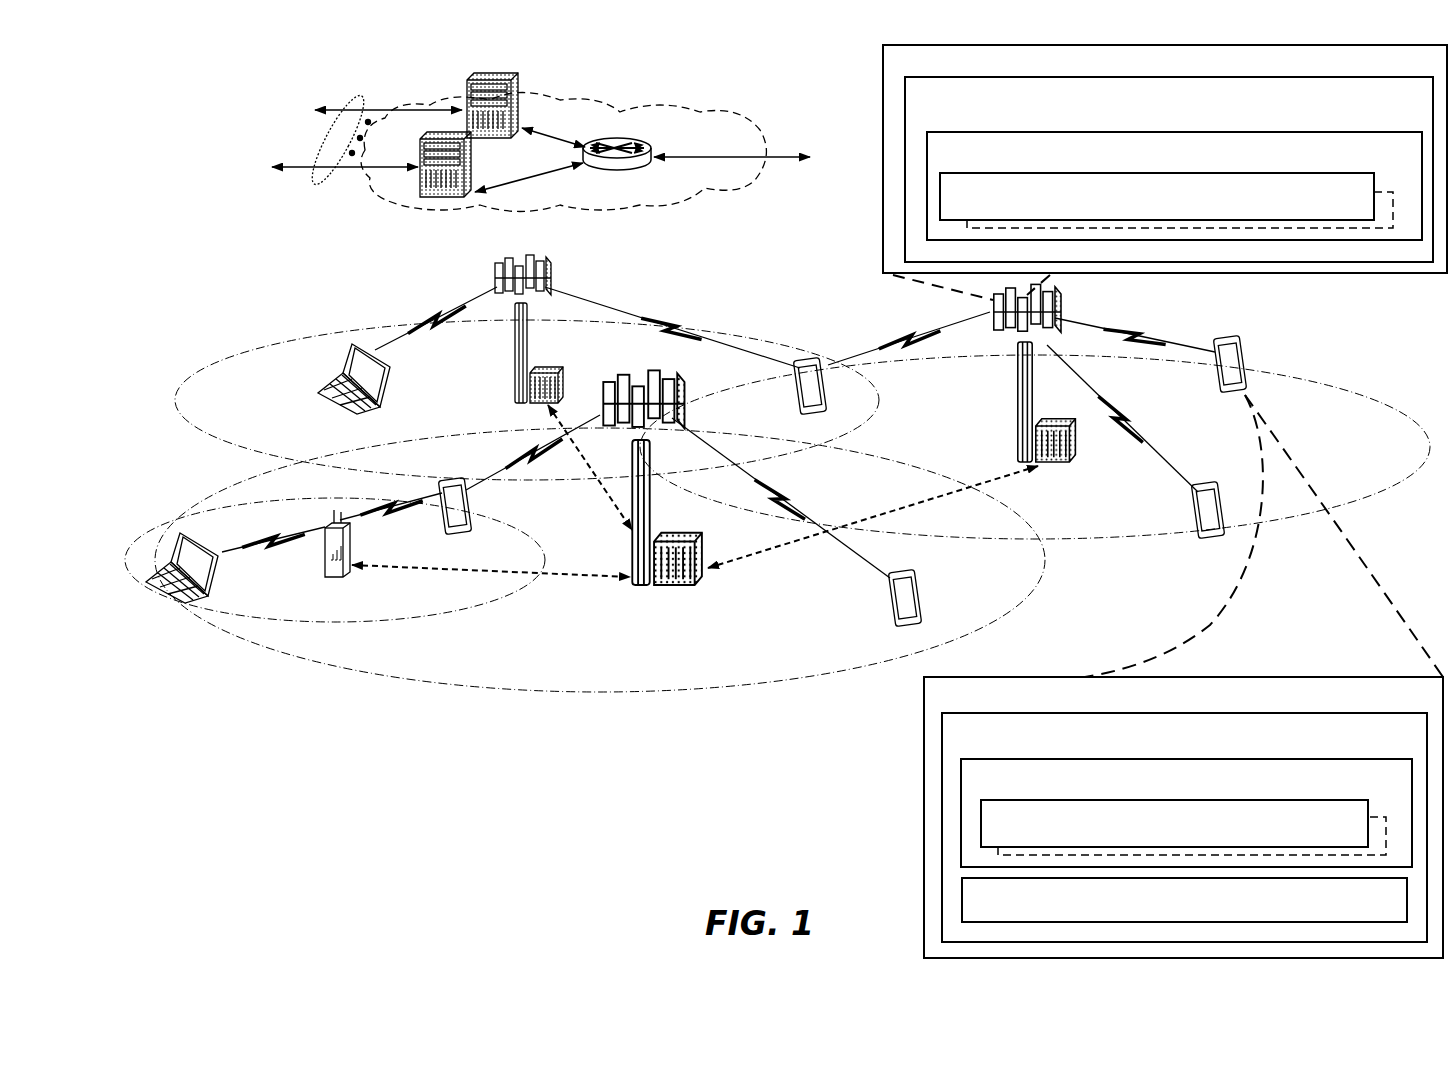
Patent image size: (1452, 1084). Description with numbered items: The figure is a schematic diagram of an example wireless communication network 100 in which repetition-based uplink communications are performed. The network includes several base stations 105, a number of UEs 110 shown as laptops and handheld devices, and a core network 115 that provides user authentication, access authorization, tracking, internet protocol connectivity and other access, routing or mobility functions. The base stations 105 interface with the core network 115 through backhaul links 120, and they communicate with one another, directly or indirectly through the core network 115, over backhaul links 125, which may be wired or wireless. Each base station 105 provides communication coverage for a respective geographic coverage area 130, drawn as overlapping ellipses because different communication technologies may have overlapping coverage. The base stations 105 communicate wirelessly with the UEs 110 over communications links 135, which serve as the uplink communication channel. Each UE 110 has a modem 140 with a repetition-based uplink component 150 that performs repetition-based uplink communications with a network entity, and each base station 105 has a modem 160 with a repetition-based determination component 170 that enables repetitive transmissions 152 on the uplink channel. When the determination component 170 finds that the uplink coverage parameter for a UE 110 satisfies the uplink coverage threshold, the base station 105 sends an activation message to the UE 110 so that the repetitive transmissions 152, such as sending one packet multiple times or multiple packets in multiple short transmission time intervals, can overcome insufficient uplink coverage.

The wireless communication network 100 is at (188, 113).
The base station 105 is at (519, 369).
The user equipment (UE) 110 is at (362, 410).
The core network 115 is at (648, 212).
The backhaul link 120 is at (330, 175).
The backhaul link 125 is at (602, 500).
The geographic coverage area 130 is at (237, 457).
The communications link 135 is at (434, 320).
The modem 140 is at (1183, 676).
The repetition-based uplink component 150 is at (1184, 827).
The repetitive transmissions 152 is at (1184, 900).
The modem 160 is at (1165, 172).
The repetition-based determination component 170 is at (1169, 169).